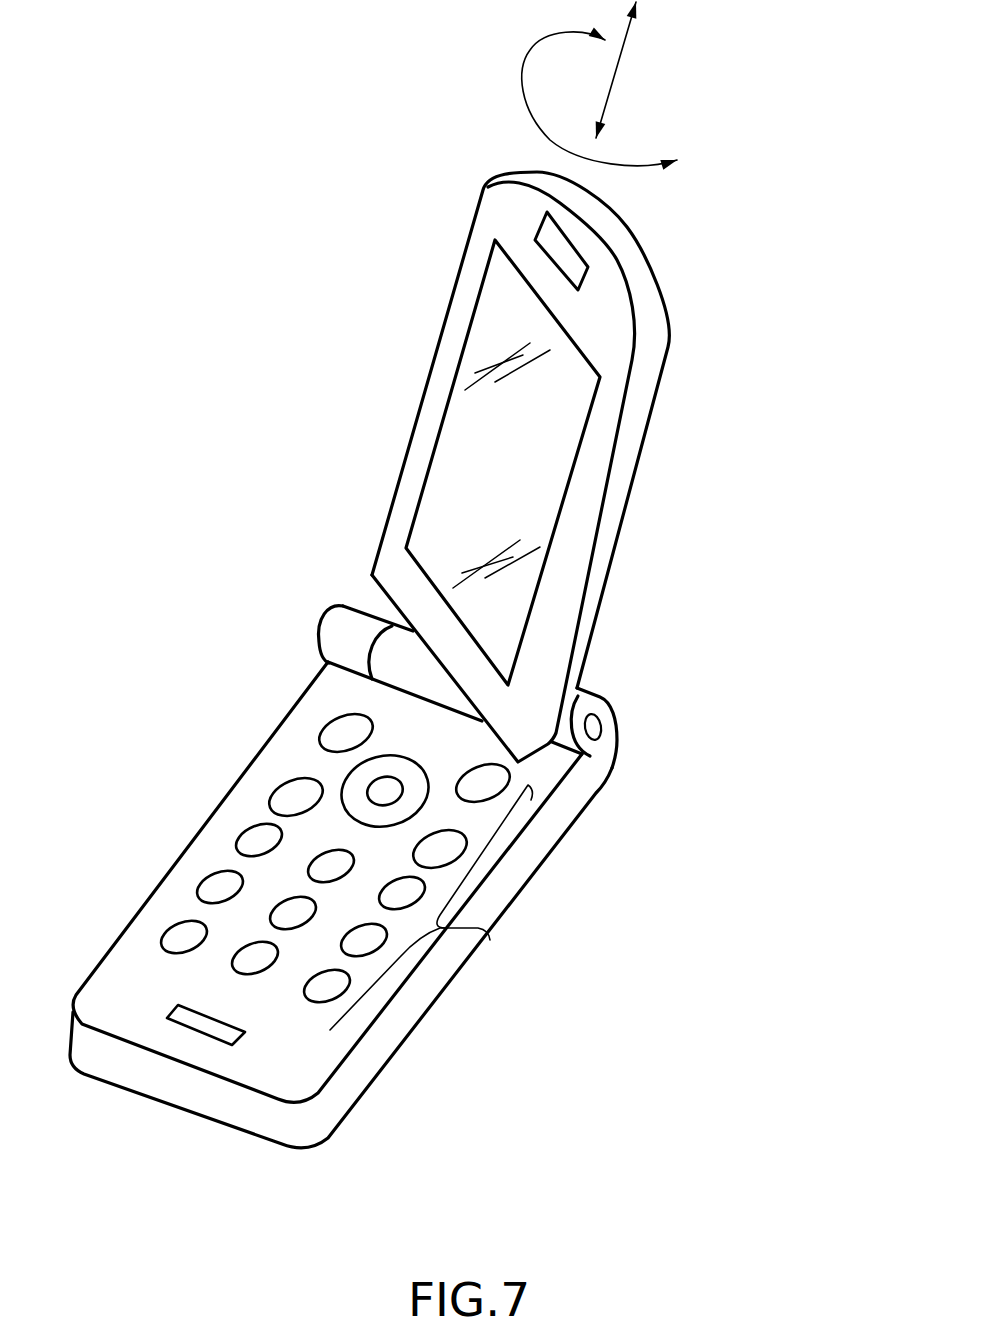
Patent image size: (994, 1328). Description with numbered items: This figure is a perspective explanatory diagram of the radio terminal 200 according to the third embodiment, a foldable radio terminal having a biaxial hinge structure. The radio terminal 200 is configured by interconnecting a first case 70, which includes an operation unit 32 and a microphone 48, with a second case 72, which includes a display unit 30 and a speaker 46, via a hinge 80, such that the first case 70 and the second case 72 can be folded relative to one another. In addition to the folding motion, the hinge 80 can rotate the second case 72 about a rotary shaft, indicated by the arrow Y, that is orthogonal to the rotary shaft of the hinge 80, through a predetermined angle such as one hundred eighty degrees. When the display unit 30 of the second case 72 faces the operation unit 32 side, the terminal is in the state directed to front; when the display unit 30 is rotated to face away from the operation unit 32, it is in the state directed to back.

The radio terminal 200 is at (805, 108).
The display unit 30 is at (455, 437).
The operation unit 32 is at (490, 940).
The speaker 46 is at (545, 233).
The microphone 48 is at (213, 1028).
The first case 70 is at (375, 1063).
The second case 72 is at (645, 405).
The hinge 80 is at (598, 724).